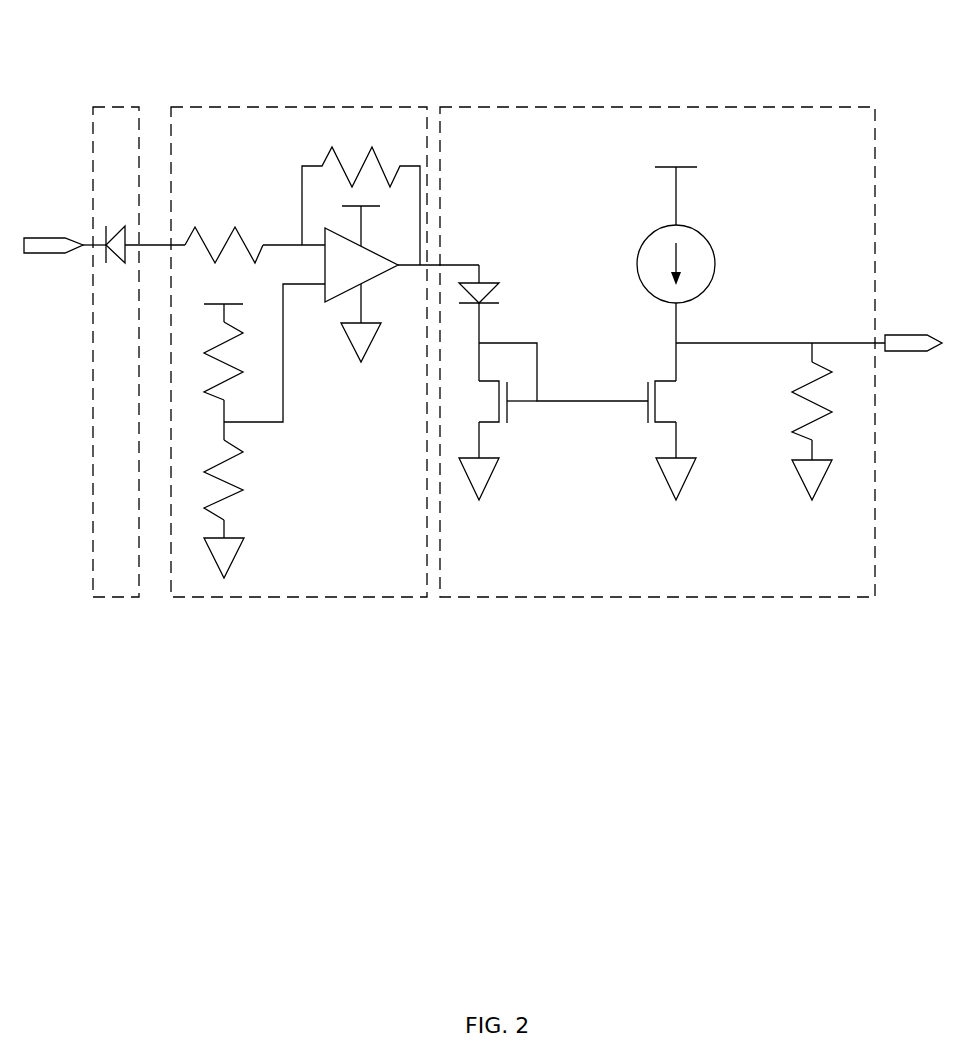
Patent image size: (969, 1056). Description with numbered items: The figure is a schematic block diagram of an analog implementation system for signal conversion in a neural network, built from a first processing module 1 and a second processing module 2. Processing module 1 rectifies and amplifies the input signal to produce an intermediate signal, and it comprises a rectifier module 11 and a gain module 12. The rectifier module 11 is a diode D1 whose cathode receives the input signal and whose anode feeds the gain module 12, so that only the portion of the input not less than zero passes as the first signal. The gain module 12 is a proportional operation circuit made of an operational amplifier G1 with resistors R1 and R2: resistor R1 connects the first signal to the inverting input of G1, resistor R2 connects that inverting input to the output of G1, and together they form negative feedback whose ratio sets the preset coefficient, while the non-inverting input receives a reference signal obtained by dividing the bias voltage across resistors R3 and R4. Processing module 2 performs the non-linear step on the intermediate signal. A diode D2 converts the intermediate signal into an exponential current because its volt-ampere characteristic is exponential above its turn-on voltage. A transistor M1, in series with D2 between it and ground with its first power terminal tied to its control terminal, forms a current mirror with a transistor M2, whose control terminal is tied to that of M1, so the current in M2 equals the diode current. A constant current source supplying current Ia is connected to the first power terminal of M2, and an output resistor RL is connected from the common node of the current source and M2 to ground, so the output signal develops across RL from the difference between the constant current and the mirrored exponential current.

The processing module 1 is at (245, 58).
The rectifier module 11 is at (127, 106).
The gain module 12 is at (293, 107).
The processing module 2 is at (638, 104).
The diode D1 is at (115, 264).
The diode D2 is at (496, 296).
The resistor R1 is at (224, 232).
The resistor R2 is at (361, 194).
The resistor R3 is at (211, 361).
The resistor R4 is at (211, 480).
The output resistor RL is at (826, 391).
The operational amplifier G1 is at (361, 284).
The transistor M1 is at (498, 402).
The transistor M2 is at (669, 402).
The current Ia is at (661, 235).